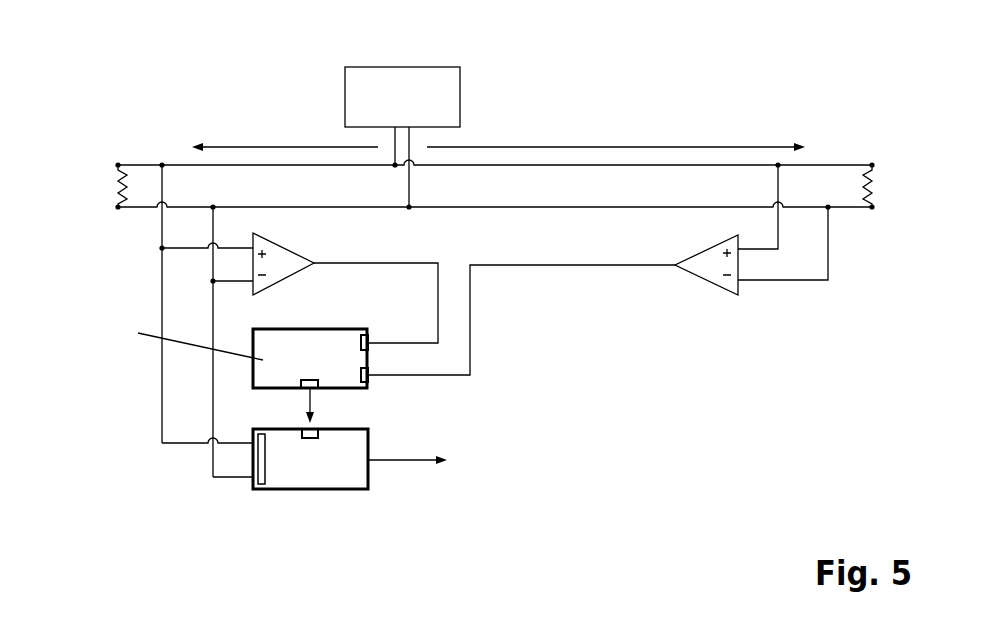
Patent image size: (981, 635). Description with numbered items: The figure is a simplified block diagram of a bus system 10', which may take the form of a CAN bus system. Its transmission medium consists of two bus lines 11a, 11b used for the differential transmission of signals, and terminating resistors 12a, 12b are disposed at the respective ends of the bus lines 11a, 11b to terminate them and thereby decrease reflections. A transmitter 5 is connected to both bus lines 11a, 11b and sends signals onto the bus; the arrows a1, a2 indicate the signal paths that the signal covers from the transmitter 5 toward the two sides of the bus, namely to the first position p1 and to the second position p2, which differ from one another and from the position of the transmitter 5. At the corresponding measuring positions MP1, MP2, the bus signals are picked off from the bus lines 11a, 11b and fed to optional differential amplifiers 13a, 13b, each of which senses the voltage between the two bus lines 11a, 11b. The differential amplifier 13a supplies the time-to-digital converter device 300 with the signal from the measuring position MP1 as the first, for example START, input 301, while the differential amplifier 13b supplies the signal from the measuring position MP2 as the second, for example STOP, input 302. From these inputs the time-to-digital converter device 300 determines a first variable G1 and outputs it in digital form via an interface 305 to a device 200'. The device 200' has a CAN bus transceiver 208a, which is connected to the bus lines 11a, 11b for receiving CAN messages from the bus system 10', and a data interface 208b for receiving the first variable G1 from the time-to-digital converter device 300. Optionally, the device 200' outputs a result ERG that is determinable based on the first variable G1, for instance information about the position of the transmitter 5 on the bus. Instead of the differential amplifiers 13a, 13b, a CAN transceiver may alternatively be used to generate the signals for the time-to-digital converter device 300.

The bus system 10' is at (582, 48).
The bus line 11a is at (525, 165).
The bus line 11b is at (525, 207).
The terminating resistor 12a is at (117, 185).
The terminating resistor 12b is at (874, 184).
The measuring position MP1 is at (136, 110).
The measuring position MP2 is at (807, 110).
The first position p1 is at (166, 110).
The second position p2 is at (777, 110).
The transmitter 5 is at (393, 113).
The arrow a1 is at (285, 135).
The arrow a2 is at (616, 135).
The differential amplifier 13a is at (284, 243).
The differential amplifier 13b is at (707, 251).
The time-to-digital converter device 300 is at (352, 328).
The first input 301 is at (369, 341).
The second input 302 is at (369, 383).
The interface 305 is at (312, 379).
The first variable G1 is at (326, 405).
The device 200' is at (356, 470).
The CAN bus transceiver 208a is at (252, 478).
The data interface 208b is at (310, 439).
The result ERG is at (407, 448).